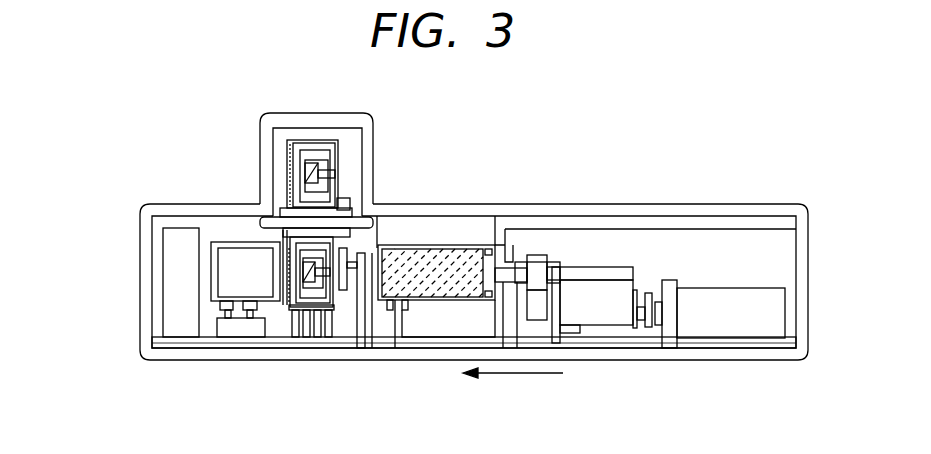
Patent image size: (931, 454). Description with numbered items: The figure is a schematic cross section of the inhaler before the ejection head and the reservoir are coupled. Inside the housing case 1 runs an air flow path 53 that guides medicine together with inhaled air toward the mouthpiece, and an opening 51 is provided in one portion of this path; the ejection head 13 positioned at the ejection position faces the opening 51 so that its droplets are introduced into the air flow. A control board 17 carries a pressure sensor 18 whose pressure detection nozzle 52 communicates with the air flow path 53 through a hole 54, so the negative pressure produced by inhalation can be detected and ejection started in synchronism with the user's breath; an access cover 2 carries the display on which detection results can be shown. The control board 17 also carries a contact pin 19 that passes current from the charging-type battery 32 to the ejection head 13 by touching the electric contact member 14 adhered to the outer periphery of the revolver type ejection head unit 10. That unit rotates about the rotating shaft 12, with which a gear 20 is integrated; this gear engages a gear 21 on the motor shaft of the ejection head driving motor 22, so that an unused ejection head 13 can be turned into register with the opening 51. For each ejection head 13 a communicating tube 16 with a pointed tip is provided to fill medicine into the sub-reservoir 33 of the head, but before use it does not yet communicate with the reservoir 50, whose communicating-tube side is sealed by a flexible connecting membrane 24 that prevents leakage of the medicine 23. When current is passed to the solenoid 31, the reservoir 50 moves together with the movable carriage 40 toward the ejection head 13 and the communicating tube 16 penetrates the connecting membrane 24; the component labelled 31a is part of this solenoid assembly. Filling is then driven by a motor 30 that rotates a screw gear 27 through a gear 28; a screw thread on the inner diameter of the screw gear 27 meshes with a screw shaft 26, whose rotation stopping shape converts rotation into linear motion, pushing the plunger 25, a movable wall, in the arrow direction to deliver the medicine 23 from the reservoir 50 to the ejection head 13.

The housing case 1 is at (765, 362).
The access cover 2 is at (458, 210).
The ejection head unit 10 is at (287, 205).
The rotating shaft 12 is at (372, 220).
The ejection head 13 is at (292, 167).
The electric contact member 14 is at (288, 308).
The communicating tube 16 is at (327, 165).
The control board 17 is at (155, 342).
The pressure sensor 18 is at (255, 330).
The contact pin 19 is at (293, 323).
The gear 20 is at (343, 198).
The gear 21 is at (343, 290).
The ejection head driving motor 22 is at (367, 300).
The medicine 23 is at (428, 285).
The connecting membrane 24 is at (385, 272).
The plunger 25 is at (505, 255).
The screw shaft 26 is at (623, 268).
The screw gear 27 is at (537, 257).
The gear 28 is at (533, 310).
The motor 30 is at (588, 317).
The solenoid 31 is at (700, 332).
The motor shaft 31a is at (648, 322).
The charging-type battery 32 is at (177, 245).
The sub-reservoir 33 is at (318, 322).
The movable carriage 40 is at (627, 343).
The reservoir 50 is at (458, 305).
The opening 51 is at (275, 267).
The pressure detection nozzle 52 is at (223, 312).
The air flow path 53 is at (212, 280).
The hole 54 is at (243, 318).